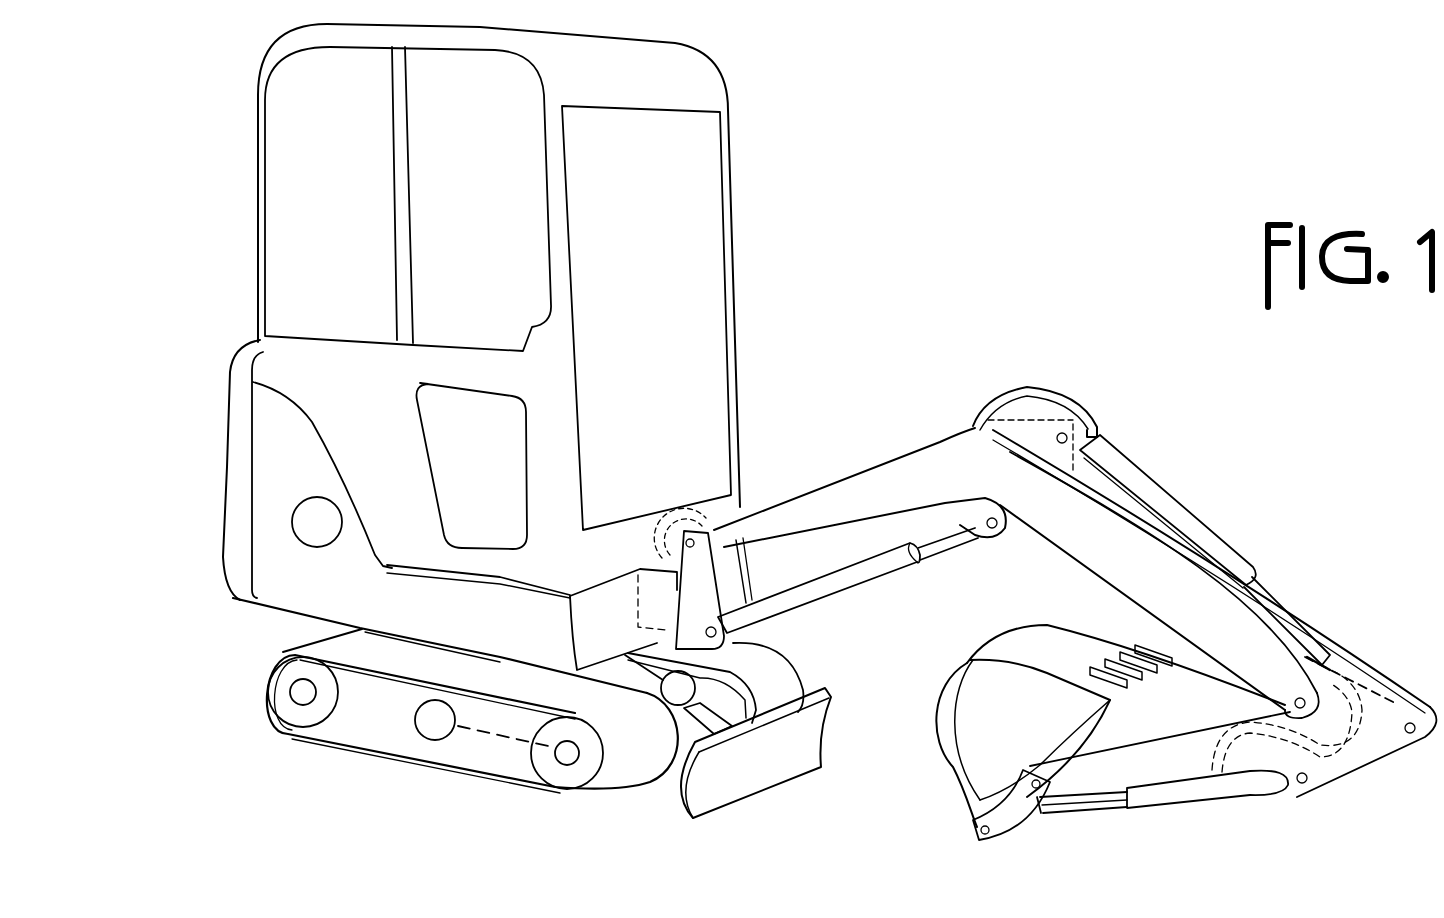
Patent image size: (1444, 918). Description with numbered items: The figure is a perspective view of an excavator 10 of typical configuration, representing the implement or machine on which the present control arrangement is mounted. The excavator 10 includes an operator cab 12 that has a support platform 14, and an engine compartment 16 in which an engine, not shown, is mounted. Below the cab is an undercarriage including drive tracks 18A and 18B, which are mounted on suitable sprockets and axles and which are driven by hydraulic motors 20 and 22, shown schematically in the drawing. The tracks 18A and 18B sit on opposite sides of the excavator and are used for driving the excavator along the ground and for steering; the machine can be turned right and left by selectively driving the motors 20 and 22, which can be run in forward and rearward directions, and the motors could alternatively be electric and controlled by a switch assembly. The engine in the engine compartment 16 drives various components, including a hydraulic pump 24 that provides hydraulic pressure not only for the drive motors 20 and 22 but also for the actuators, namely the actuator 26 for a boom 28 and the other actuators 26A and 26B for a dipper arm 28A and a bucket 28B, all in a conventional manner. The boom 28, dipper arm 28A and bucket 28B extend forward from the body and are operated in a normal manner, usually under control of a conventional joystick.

The excavator 10 is at (768, 302).
The operator cab 12 is at (290, 238).
The support platform 14 is at (495, 605).
The engine compartment 16 is at (245, 397).
The drive track 18A is at (280, 726).
The drive track 18B is at (803, 675).
The hydraulic motor 20 is at (453, 742).
The hydraulic motor 22 is at (763, 647).
The hydraulic pump 24 is at (300, 505).
The actuator 26 is at (855, 594).
The actuator 26A is at (1168, 500).
The actuator 26B is at (1155, 800).
The boom 28 is at (905, 468).
The dipper arm 28A is at (1100, 790).
The bucket 28B is at (983, 740).